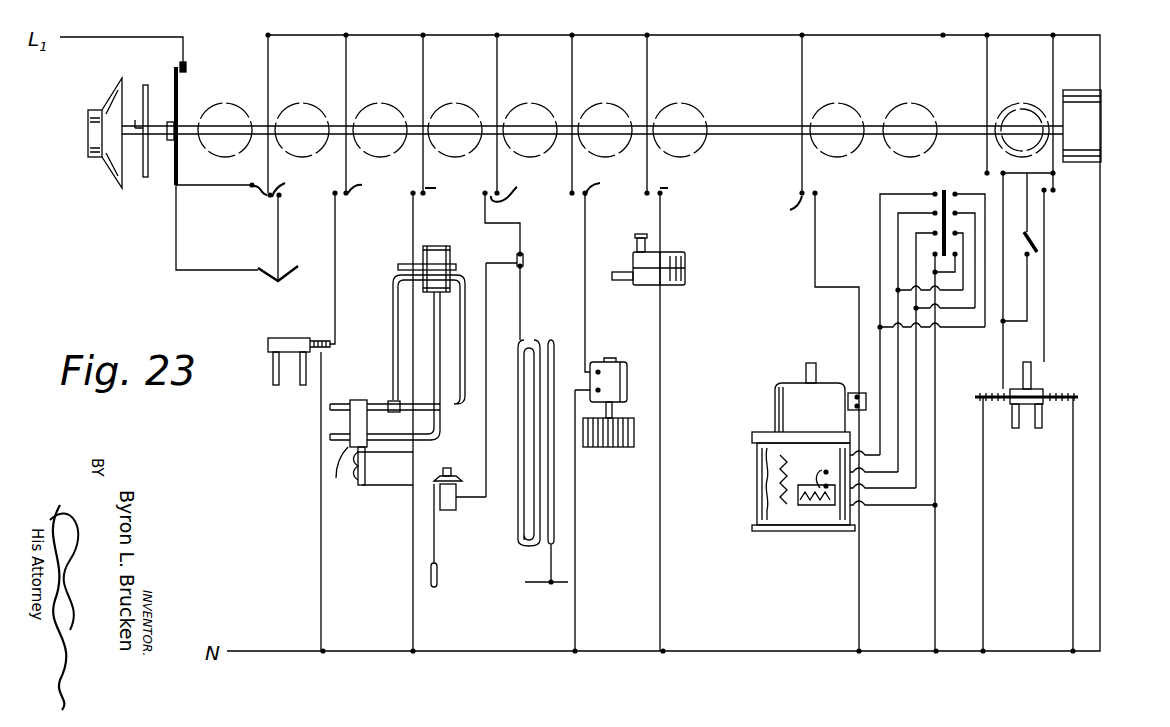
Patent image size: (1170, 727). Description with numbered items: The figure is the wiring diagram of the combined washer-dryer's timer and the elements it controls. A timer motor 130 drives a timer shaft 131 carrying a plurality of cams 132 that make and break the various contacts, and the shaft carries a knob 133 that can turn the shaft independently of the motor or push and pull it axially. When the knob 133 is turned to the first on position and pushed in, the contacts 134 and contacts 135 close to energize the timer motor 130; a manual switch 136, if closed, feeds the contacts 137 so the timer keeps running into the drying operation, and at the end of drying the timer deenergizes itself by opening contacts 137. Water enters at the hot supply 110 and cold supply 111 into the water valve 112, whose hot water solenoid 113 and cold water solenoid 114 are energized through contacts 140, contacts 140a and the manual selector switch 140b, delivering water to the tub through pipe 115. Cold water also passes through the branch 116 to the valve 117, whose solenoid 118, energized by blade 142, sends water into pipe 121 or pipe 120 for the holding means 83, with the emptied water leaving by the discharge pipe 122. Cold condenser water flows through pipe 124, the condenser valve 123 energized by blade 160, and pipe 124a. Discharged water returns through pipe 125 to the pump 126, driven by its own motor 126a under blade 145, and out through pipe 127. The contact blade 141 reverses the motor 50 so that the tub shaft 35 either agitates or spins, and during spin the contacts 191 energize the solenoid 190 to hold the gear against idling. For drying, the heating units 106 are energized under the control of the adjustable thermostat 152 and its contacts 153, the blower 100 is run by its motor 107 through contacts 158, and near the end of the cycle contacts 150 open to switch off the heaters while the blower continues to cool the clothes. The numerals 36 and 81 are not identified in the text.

The tub shaft 35 is at (806, 370).
The drive motor 36 is at (778, 398).
The reversible motor 50 is at (792, 485).
The valve armature 81 is at (400, 268).
The holding means 83 is at (440, 246).
The blower 100 is at (596, 440).
The electric heating units 106 is at (550, 340).
The blower motor 107 is at (610, 372).
The hot water supply 110 is at (1043, 420).
The cold water supply 111 is at (1012, 420).
The water valve 112 is at (1008, 388).
The hot water controlling solenoid 113 is at (1062, 398).
The cold water controlling solenoid 114 is at (985, 395).
The pipe 115 is at (1031, 374).
The branch 116 is at (333, 407).
The valve 117 is at (337, 438).
The solenoid 118 is at (368, 467).
The pipe 120 is at (438, 434).
The pipe 121 is at (358, 398).
The discharge pipe 122 is at (339, 475).
The condenser valve 123 is at (293, 338).
The pipe 124 is at (273, 377).
The pipe 124a is at (302, 388).
The pipe 125 is at (650, 245).
The pump 126 is at (633, 265).
The pump motor 126a is at (686, 262).
The pipe 127 is at (617, 281).
The timer motor 130 is at (1090, 114).
The timer shaft 131 is at (770, 120).
The cams 132 is at (1014, 118).
The knob 133 is at (90, 128).
The contacts 134 is at (183, 80).
The contacts 135 is at (247, 200).
The manual switch 136 is at (291, 238).
The contacts 137 is at (294, 183).
The contacts 140 is at (1046, 194).
The contacts 140a is at (996, 172).
The manual selector switch 140b is at (1033, 240).
The contact blade 141 is at (943, 180).
The blade 142 is at (440, 183).
The blade 145 is at (673, 183).
The contacts 150 is at (517, 186).
The manual adjustable thermostat 152 is at (447, 510).
The contacts 153 is at (524, 266).
The contacts 158 is at (601, 183).
The blade 160 is at (365, 183).
The solenoid 190 is at (853, 392).
The contacts 191 is at (810, 420).